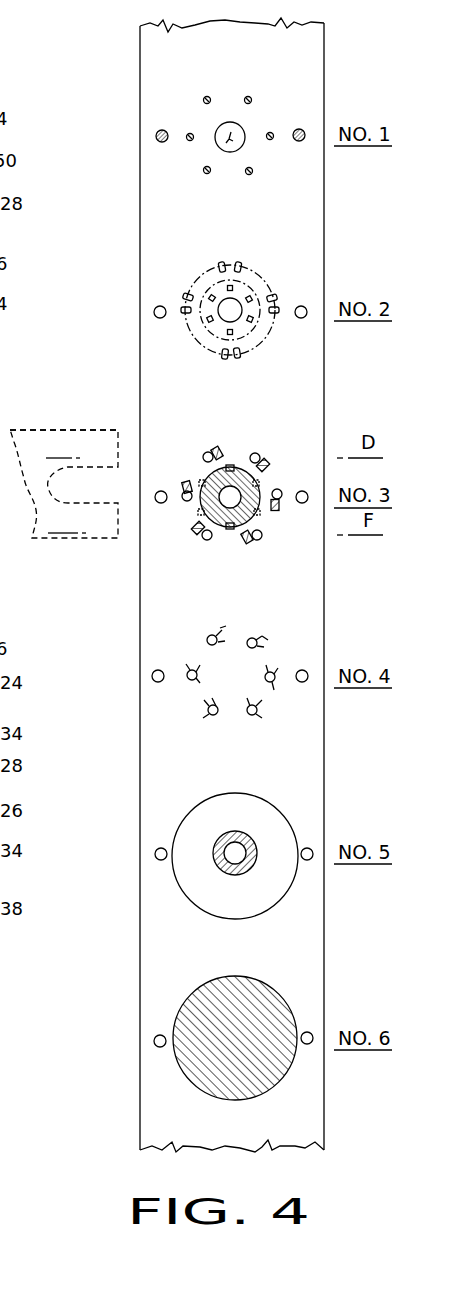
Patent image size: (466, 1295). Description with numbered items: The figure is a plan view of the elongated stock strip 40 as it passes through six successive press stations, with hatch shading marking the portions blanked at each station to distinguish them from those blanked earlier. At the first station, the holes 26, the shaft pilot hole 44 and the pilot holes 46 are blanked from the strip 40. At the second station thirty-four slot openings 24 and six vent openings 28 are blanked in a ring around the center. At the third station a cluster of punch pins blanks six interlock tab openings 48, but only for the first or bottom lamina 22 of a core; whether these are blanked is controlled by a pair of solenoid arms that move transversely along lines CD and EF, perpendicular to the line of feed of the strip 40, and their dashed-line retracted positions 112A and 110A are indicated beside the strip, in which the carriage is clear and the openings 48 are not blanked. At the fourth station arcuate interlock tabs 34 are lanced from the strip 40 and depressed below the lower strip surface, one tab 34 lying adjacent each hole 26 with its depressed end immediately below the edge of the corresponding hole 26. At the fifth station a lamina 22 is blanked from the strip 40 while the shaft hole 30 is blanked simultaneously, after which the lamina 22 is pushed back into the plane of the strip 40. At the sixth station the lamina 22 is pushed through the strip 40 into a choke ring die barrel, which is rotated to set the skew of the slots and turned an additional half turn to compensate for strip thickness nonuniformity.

The lamina 22 is at (175, 880).
The slot openings 24 is at (184, 306).
The holes 26 is at (248, 96).
The vent openings 28 is at (254, 318).
The shaft hole 30 is at (220, 836).
The interlock tabs 34 is at (276, 672).
The stock strip 40 is at (324, 1090).
The shaft pilot hole 44 is at (216, 130).
The pilot holes 46 is at (156, 136).
The interlock tab openings 48 is at (266, 462).
The retracted position of solenoid arm 110A is at (56, 538).
The retracted position of solenoid arm 112A is at (48, 430).